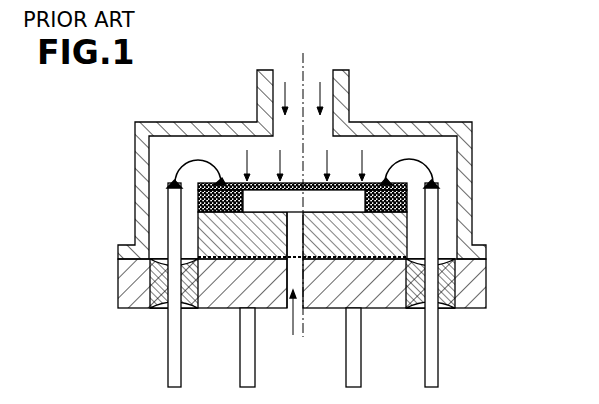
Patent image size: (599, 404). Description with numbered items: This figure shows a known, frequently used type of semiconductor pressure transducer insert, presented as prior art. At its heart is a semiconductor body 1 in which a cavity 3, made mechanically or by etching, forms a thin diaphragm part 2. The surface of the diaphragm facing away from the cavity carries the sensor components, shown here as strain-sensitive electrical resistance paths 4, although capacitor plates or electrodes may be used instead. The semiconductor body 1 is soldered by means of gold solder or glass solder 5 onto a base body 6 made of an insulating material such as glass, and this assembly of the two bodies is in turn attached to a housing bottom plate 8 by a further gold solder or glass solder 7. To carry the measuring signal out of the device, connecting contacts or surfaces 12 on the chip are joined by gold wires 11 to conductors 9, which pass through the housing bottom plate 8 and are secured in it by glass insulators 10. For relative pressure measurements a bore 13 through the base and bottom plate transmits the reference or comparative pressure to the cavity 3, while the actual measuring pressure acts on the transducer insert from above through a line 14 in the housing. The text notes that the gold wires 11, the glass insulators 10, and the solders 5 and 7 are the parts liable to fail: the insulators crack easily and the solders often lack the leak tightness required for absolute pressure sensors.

The semi-conductor body 1 is at (407, 197).
The diaphragm part 2 is at (312, 182).
The cavity 3 is at (328, 203).
The strain-sensitive electrical resistance paths 4 is at (255, 182).
The gold solder or glass solder 5 is at (407, 230).
The base body 6 is at (200, 238).
The gold solder or glass solder 7 is at (223, 290).
The housing bottom plate 8 is at (327, 290).
The conductors 9 is at (167, 368).
The glass insulators 10 is at (158, 292).
The gold wires 11 is at (188, 162).
The connecting contacts or surfaces 12 is at (232, 182).
The bore 13 is at (290, 238).
The line 14 is at (310, 78).